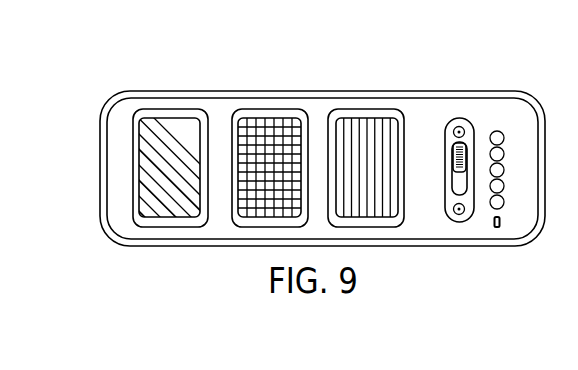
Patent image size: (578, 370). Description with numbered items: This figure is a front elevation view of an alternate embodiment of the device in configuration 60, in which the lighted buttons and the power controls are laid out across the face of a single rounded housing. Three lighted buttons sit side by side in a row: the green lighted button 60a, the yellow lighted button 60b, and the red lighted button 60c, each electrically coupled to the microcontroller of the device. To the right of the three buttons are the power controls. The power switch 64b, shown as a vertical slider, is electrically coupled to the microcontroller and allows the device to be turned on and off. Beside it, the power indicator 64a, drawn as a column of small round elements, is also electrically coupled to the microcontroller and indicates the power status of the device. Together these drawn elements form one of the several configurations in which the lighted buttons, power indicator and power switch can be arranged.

The configuration 60 is at (78, 76).
The green lighted button 60a is at (167, 124).
The yellow lighted button 60b is at (270, 130).
The red lighted button 60c is at (372, 127).
The power indicator 64a is at (509, 159).
The power switch 64b is at (453, 158).